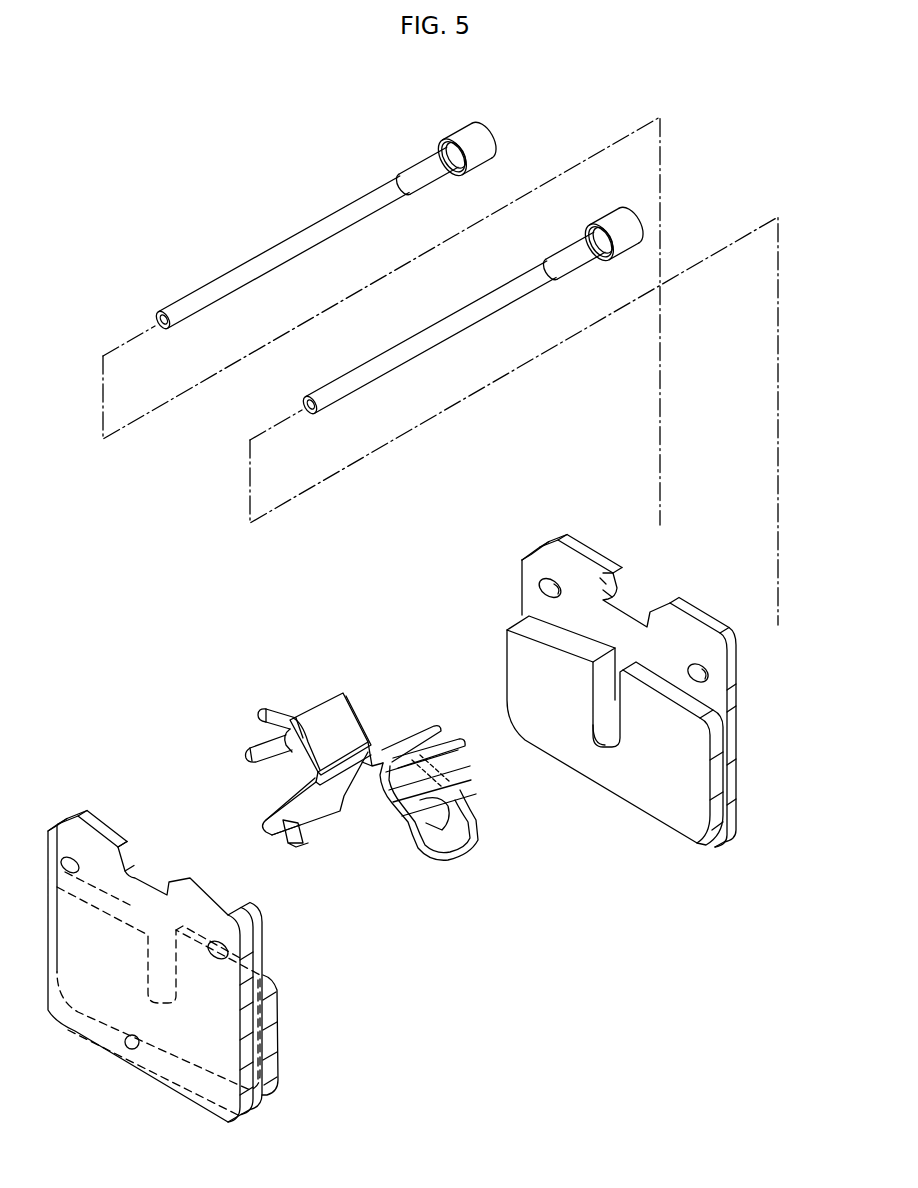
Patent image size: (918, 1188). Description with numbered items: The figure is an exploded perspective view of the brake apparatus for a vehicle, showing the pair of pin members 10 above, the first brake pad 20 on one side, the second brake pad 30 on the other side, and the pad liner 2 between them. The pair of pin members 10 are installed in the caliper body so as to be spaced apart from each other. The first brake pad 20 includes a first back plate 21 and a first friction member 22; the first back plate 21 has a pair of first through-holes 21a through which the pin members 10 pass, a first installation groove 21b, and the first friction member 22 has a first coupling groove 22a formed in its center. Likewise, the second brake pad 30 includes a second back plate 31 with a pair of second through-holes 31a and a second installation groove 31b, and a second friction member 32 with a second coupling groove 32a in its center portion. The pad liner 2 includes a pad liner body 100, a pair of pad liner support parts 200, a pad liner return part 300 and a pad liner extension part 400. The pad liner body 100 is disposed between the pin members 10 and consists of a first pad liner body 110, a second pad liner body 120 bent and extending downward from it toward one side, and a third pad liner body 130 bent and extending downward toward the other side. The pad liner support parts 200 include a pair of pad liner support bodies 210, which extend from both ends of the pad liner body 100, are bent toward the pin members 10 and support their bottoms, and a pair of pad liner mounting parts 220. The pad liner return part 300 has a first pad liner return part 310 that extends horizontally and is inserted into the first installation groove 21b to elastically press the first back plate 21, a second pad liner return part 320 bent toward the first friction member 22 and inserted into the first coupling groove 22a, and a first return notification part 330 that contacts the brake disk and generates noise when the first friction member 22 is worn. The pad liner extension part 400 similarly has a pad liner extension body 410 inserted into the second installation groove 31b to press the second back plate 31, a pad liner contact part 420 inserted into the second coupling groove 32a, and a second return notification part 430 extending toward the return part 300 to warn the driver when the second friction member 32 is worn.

The pad liner 2 is at (470, 890).
The pin members 10 is at (572, 253).
The first brake pad 20 is at (674, 662).
The first back plate 21 is at (660, 662).
The first through-holes 21a is at (556, 590).
The first installation groove 21b is at (640, 620).
The first friction member 22 is at (649, 730).
The first coupling groove 22a is at (607, 737).
The second brake pad 30 is at (218, 941).
The second back plate 31 is at (196, 941).
The second through-holes 31a is at (68, 862).
The second installation groove 31b is at (137, 868).
The second friction member 32 is at (209, 995).
The second coupling groove 32a is at (165, 995).
The pad liner body 100 is at (374, 755).
The first pad liner body 110 is at (252, 757).
The second pad liner body 120 is at (370, 710).
The third pad liner body 130 is at (348, 770).
The pad liner support parts 200 is at (374, 711).
The pad liner support bodies 210 is at (327, 707).
The pad liner mounting parts 220 is at (266, 716).
The pad liner return part 300 is at (431, 695).
The first pad liner return part 310 is at (417, 707).
The second pad liner return part 320 is at (455, 710).
The first return notification part 330 is at (450, 732).
The pad liner extension part 400 is at (372, 850).
The pad liner extension body 410 is at (275, 838).
The pad liner contact part 420 is at (292, 845).
The second return notification part 430 is at (392, 818).